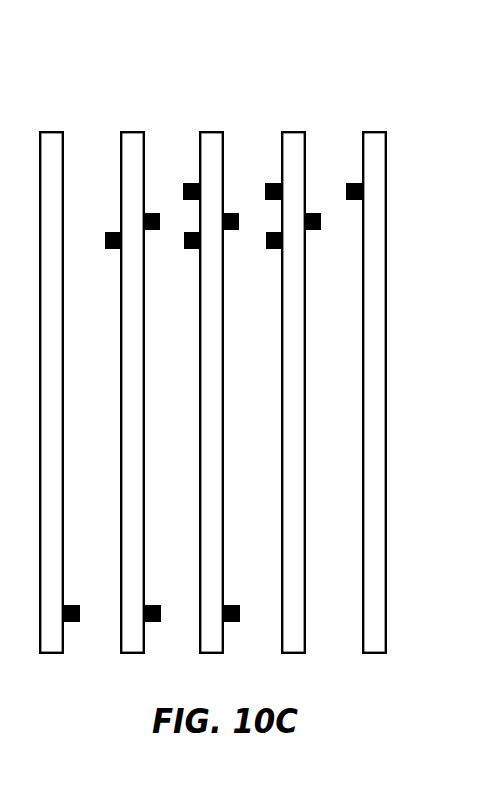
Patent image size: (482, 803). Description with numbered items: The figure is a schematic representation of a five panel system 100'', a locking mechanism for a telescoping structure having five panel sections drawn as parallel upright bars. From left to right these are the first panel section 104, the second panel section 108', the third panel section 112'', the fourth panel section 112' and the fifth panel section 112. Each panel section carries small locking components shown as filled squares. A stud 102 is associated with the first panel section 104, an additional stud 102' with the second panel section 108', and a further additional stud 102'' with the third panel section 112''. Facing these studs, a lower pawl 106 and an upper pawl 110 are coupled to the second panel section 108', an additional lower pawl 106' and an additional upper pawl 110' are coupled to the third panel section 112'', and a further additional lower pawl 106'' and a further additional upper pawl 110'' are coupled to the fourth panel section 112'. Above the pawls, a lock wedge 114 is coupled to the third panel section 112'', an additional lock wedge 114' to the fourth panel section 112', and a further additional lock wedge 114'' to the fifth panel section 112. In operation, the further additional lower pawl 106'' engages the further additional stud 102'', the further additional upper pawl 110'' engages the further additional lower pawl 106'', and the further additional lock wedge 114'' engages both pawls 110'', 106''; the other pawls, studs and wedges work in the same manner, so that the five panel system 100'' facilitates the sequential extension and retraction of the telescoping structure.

The five panel system 100'' is at (258, 339).
The stud 102 is at (84, 577).
The additional stud 102' is at (168, 577).
The further additional stud 102'' is at (249, 577).
The first panel section 104 is at (52, 131).
The lower pawl 106 is at (95, 302).
The additional lower pawl 106' is at (176, 302).
The further additional lower pawl 106'' is at (256, 302).
The second panel section 108' is at (133, 363).
The upper pawl 110 is at (165, 250).
The additional upper pawl 110' is at (245, 250).
The further additional upper pawl 110'' is at (329, 250).
The fifth panel section 112 is at (376, 363).
The fourth panel section 112' is at (296, 363).
The third panel section 112'' is at (214, 363).
The lock wedge 114 is at (178, 168).
The additional lock wedge 114' is at (260, 168).
The further additional lock wedge 114'' is at (340, 168).